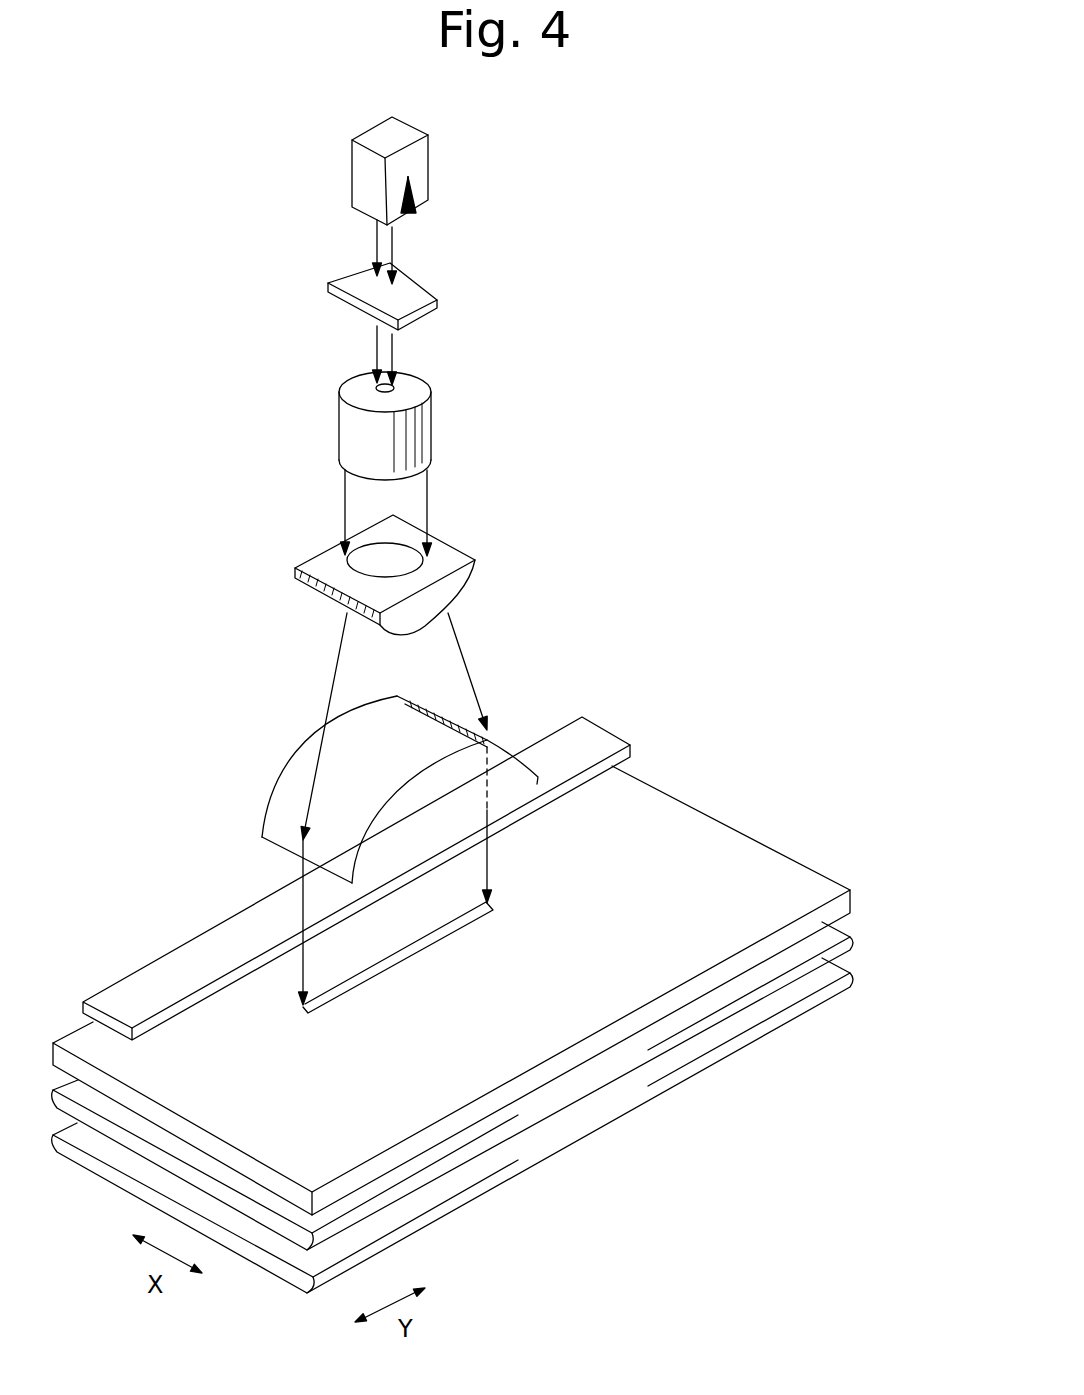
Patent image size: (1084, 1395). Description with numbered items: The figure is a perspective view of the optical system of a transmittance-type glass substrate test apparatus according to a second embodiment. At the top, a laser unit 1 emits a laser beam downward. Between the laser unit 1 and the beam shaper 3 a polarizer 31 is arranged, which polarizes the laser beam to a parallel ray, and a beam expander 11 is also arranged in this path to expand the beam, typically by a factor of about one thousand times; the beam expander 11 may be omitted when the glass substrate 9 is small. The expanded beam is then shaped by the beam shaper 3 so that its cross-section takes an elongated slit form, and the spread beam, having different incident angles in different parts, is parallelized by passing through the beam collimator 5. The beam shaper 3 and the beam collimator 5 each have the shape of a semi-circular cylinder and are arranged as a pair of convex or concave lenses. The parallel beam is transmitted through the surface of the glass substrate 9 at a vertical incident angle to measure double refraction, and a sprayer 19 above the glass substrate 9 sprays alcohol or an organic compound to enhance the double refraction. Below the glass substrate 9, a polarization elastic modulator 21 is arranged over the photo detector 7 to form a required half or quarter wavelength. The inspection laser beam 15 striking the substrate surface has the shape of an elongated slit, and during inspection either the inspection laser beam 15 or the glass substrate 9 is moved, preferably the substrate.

The laser unit 1 is at (450, 159).
The polarizer 31 is at (458, 257).
The beam expander 11 is at (457, 412).
The beam shaper 3 is at (480, 547).
The beam collimator 5 is at (533, 702).
The sprayer 19 is at (609, 742).
The glass substrate 9 is at (492, 990).
The polarization elastic modulator 21 is at (852, 941).
The photo detector 7 is at (851, 980).
The inspection laser beam 15 is at (440, 938).